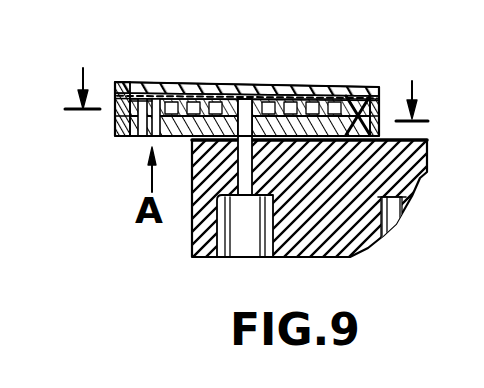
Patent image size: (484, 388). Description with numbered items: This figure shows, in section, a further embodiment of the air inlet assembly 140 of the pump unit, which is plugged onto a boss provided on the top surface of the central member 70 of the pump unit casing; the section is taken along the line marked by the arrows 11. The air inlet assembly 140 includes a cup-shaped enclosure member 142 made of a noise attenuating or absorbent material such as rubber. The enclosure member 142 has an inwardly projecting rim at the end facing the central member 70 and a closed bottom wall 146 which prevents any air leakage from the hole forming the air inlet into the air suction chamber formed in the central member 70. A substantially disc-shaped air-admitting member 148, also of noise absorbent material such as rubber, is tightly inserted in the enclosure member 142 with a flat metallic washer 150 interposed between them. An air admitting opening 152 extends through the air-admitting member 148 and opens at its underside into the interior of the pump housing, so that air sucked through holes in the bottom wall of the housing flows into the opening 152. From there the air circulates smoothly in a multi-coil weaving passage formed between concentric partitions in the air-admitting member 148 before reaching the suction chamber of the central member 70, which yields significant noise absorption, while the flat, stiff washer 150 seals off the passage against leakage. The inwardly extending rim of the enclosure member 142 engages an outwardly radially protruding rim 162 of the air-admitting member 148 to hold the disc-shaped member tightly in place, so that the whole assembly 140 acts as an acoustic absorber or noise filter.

The section line 11- 11 is at (248, 76).
The central member 70 is at (191, 237).
The air inlet assembly 140 is at (230, 102).
The cup-shaped enclosure member 142 is at (387, 78).
The closed bottom wall 146 is at (188, 86).
The air-admitting member 148 is at (163, 135).
The flat metallic washer 150 is at (313, 88).
The air admitting opening 152 is at (147, 101).
The outwardly radially protruding rim 162 is at (117, 84).